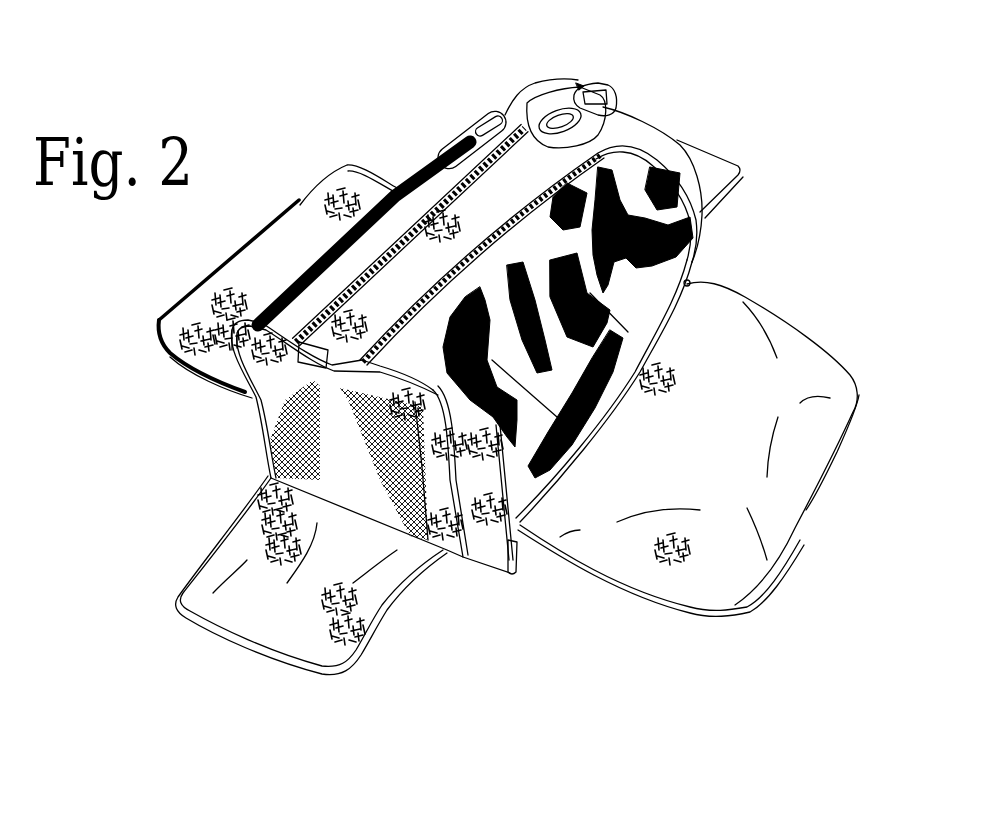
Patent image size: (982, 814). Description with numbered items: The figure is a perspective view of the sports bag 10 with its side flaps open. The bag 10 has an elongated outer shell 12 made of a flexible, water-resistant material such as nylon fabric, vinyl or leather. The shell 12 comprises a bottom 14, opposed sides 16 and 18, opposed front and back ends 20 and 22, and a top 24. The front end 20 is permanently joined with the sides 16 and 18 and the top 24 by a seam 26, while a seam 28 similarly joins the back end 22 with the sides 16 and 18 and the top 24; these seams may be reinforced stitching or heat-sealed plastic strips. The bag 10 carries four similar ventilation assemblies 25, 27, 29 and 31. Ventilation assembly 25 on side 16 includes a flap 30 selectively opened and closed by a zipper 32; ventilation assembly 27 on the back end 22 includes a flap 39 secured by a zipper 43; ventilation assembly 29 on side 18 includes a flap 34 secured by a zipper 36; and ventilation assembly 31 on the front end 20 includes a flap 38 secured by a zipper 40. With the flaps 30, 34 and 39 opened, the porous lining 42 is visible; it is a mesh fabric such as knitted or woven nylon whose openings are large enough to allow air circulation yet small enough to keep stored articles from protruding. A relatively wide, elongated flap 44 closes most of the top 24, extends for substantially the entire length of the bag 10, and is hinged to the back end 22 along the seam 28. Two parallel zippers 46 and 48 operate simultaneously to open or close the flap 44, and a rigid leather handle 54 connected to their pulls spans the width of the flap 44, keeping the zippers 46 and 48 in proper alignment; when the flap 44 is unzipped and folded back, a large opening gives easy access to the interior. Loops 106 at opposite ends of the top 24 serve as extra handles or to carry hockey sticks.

The sports bag 10 is at (176, 506).
The outer shell 12 is at (238, 343).
The bottom 14 is at (477, 557).
The side 16 is at (430, 170).
The side 18 is at (699, 254).
The front end 20 is at (632, 118).
The back end 22 is at (255, 398).
The top 24 is at (477, 143).
The ventilation assembly 25 is at (342, 158).
The seam 26 is at (458, 547).
The ventilation assembly 27 is at (190, 648).
The seam 28 is at (577, 85).
The ventilation assembly 29 is at (800, 598).
The flap 30 is at (305, 204).
The ventilation assembly 31 is at (693, 110).
The zipper 32 is at (169, 315).
The flap 34 is at (807, 480).
The zipper 36 is at (715, 613).
The flap 38 is at (720, 167).
The flap 39 is at (297, 643).
The zipper 40 is at (745, 173).
The lining 42 is at (697, 252).
The zipper 43 is at (260, 648).
The flap 44 is at (375, 306).
The zipper 46 is at (577, 437).
The zipper 48 is at (307, 318).
The handle 54 is at (527, 103).
The loops 106 is at (580, 85).